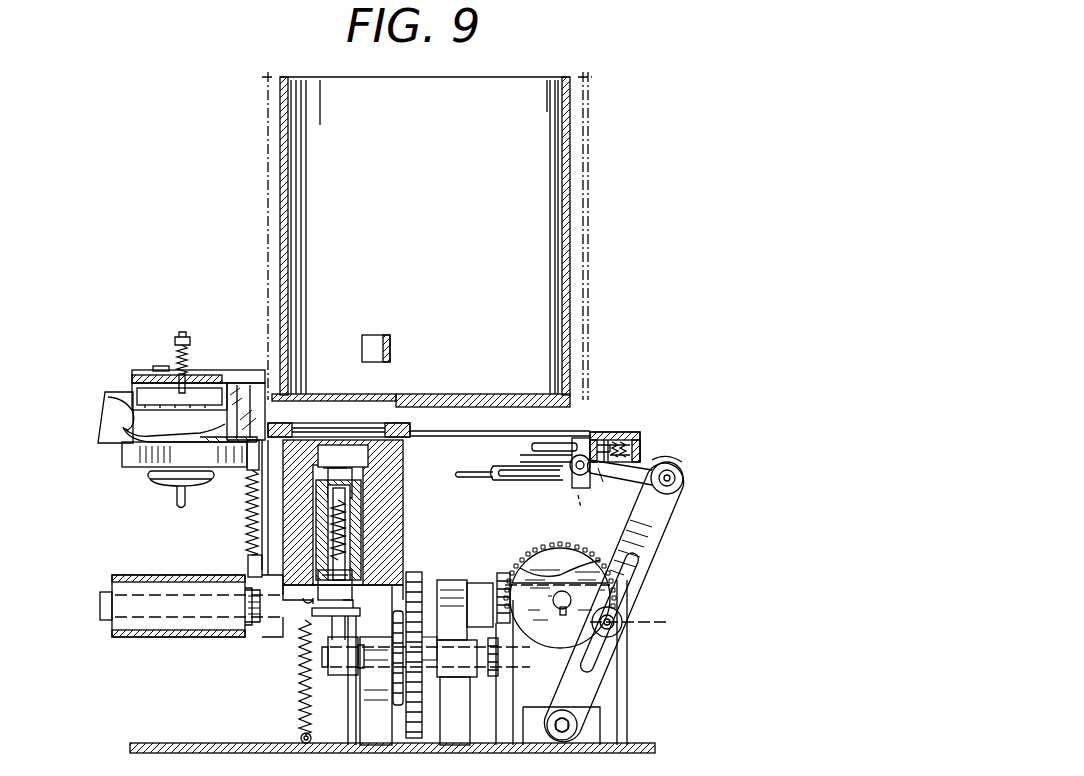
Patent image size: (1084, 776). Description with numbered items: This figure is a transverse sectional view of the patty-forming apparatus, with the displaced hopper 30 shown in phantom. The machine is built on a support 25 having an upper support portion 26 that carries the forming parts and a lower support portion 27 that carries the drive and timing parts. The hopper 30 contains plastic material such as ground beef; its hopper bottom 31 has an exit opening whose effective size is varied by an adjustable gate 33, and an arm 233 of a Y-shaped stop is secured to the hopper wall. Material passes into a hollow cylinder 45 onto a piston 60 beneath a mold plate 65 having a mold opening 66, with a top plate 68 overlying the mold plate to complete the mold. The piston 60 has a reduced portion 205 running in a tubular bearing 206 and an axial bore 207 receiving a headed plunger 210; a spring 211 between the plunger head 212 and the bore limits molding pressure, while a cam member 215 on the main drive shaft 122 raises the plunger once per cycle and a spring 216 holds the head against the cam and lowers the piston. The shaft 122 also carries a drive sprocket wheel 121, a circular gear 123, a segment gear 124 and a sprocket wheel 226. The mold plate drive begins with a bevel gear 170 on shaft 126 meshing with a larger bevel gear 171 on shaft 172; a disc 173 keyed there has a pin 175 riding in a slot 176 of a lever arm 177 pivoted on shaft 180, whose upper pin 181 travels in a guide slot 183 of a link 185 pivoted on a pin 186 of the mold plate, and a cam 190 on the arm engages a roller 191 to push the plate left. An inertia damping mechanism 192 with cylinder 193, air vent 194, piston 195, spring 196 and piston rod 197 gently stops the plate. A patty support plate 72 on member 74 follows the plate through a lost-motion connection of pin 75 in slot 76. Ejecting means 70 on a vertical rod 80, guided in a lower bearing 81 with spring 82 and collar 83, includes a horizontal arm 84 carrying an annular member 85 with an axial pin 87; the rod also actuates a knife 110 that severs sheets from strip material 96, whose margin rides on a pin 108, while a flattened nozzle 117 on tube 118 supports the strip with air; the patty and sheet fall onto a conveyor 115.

The support 25 is at (748, 560).
The upper support portion 26 is at (92, 488).
The lower support portion 27 is at (90, 648).
The hopper 30 is at (592, 181).
The hopper bottom 31 is at (458, 394).
The adjustable gate 33 is at (312, 394).
The hollow cylinder 45 is at (365, 500).
The piston 60 is at (343, 512).
The mold plate 65 is at (525, 431).
The mold opening 66 is at (380, 430).
The top plate 68 is at (412, 430).
The ejecting means 70 is at (142, 355).
The patty support plate 72 is at (215, 450).
The member 74 is at (468, 478).
The pin 75 is at (581, 509).
The slot 76 is at (525, 482).
The vertical rod 80 is at (248, 518).
The lower bearing 81 is at (248, 562).
The spring 82 is at (254, 532).
The collar 83 is at (250, 472).
The horizontal arm 84 is at (205, 376).
The annular member 85 is at (125, 390).
The axial pin 87 is at (181, 332).
The strip material 96 is at (118, 416).
The pin 108 is at (112, 436).
The knife 110 is at (110, 400).
The conveyor 115 is at (140, 575).
The flattened nozzle 117 is at (155, 485).
The tube 118 is at (177, 500).
The drive sprocket wheel 121 is at (398, 700).
The main drive shaft 122 is at (340, 675).
The circular gear 123 is at (398, 688).
The segment gear 124 is at (428, 580).
The shaft 126 is at (452, 598).
The bevel gear 170 is at (500, 575).
The bevel gear 171 is at (560, 575).
The shaft 172 is at (560, 608).
The disc 173 is at (560, 572).
The pin 175 is at (614, 622).
The slot 176 is at (630, 580).
The lever arm 177 is at (670, 530).
The shaft 180 is at (578, 725).
The pin 181 is at (678, 478).
The guide slot 183 is at (620, 476).
The link 185 is at (600, 485).
The pin 186 is at (572, 480).
The cam 190 is at (672, 462).
The roller 191 is at (530, 461).
The inertia damping mechanism 192 is at (612, 432).
The cylinder 193 is at (605, 431).
The air vent 194 is at (630, 442).
The piston 195 is at (610, 440).
The spring 196 is at (640, 445).
The piston rod 197 is at (530, 448).
The reduced portion 205 is at (356, 478).
The tubular bearing 206 is at (348, 508).
The axial bore 207 is at (345, 548).
The headed plunger 210 is at (328, 618).
The spring 211 is at (348, 530).
The plunger head 212 is at (312, 604).
The cam member 215 is at (330, 630).
The spring 216 is at (300, 702).
The sprocket wheel 226 is at (493, 665).
The arm 233 is at (370, 335).